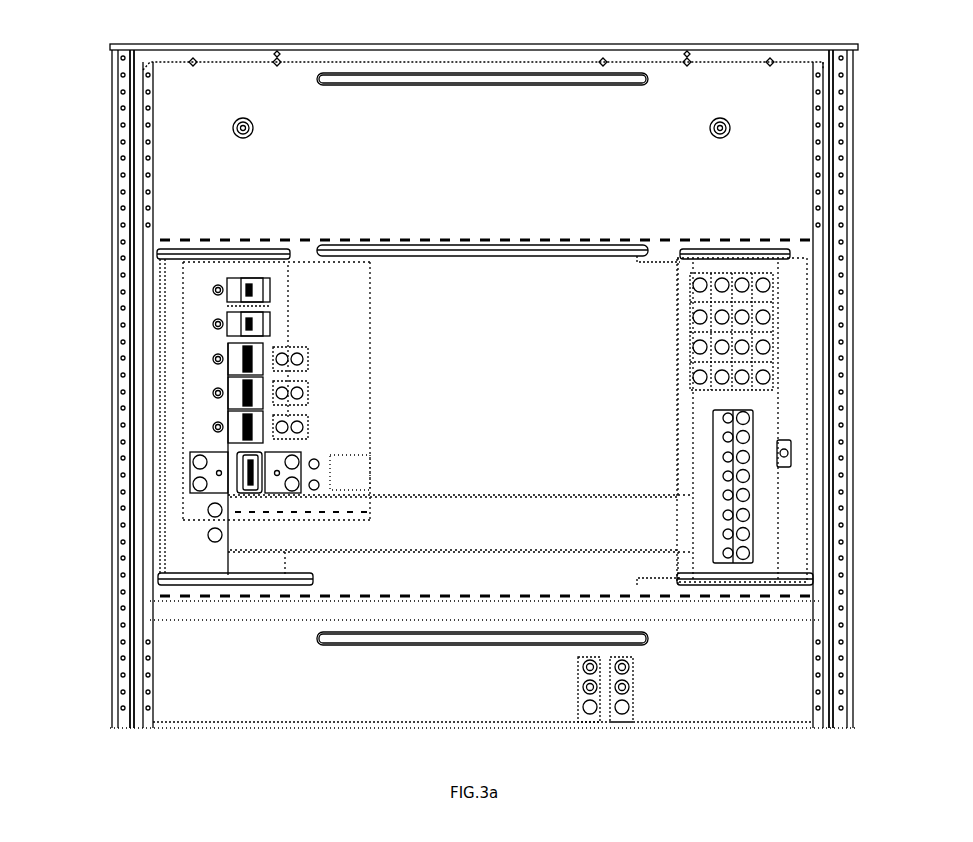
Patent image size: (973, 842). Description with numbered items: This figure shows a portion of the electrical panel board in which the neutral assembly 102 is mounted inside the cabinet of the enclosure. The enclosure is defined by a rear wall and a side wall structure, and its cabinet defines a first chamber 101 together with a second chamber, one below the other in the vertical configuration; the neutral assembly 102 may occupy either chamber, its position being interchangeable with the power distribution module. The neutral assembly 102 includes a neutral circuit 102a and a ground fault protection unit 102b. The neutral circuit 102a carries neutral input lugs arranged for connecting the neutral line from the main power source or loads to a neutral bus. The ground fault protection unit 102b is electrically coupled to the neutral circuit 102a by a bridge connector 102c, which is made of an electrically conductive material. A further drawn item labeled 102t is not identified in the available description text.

The first chamber 101 is at (210, 163).
The neutral assembly 102 is at (826, 290).
The upper circuit breakers 102t is at (215, 356).
The ground fault protection unit 102b is at (168, 398).
The neutral circuit 102a is at (762, 424).
The bridge connector 102c is at (275, 537).